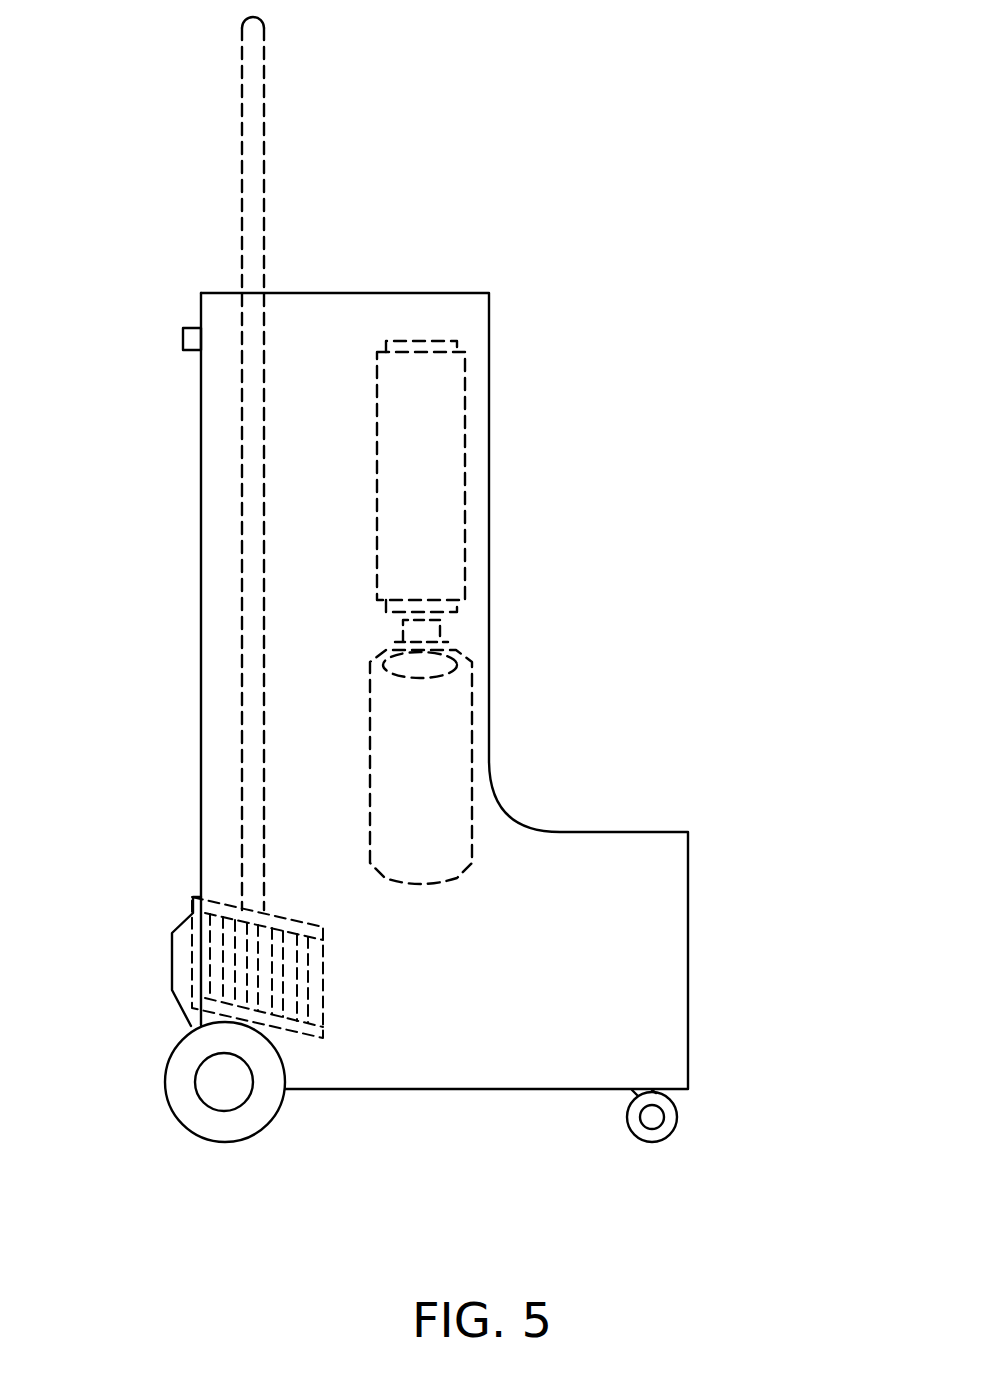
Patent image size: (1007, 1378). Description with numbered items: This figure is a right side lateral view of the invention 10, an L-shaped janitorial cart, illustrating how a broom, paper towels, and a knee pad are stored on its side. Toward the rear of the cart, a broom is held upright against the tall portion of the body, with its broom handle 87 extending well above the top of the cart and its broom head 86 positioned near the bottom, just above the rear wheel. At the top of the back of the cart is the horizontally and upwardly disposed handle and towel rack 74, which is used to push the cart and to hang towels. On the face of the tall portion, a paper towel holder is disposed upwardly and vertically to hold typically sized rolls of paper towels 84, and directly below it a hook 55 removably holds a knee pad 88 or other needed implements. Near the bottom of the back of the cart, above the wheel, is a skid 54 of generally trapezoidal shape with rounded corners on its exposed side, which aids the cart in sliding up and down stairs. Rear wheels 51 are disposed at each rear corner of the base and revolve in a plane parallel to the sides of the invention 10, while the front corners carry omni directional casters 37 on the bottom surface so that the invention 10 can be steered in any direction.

The invention 10 is at (598, 250).
The handle and towel rack 74 is at (183, 328).
The broom handle 87 is at (243, 467).
The rolls of paper towels 84 is at (488, 466).
The hook 55 is at (447, 614).
The knee pad 88 is at (456, 728).
The broom head 86 is at (202, 866).
The skid 54 is at (180, 983).
The rear wheels 51 is at (242, 1128).
The omni directional casters 37 is at (677, 1117).